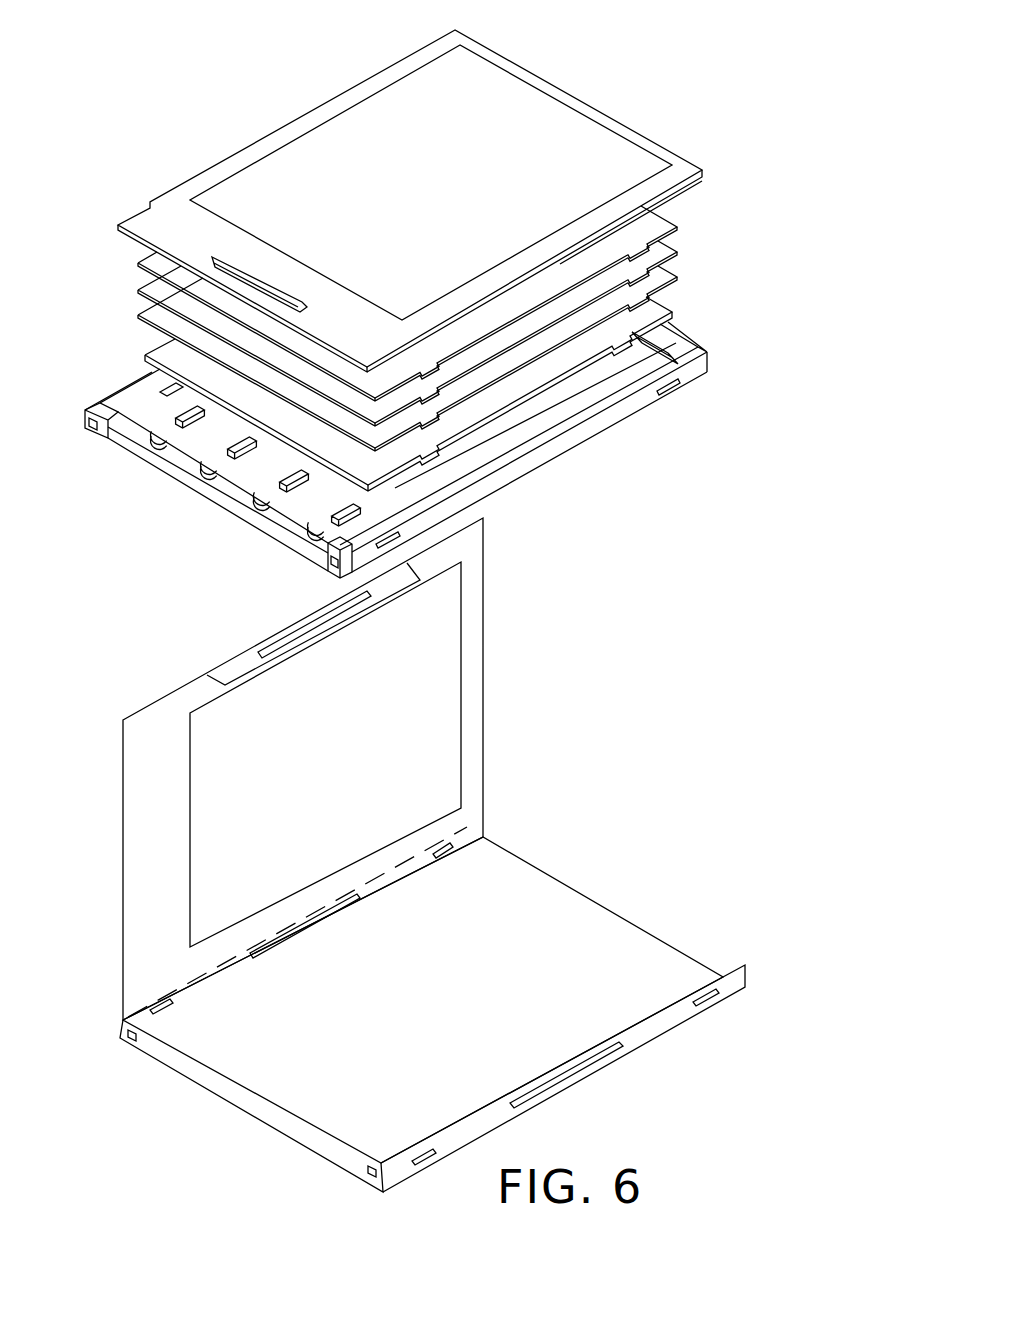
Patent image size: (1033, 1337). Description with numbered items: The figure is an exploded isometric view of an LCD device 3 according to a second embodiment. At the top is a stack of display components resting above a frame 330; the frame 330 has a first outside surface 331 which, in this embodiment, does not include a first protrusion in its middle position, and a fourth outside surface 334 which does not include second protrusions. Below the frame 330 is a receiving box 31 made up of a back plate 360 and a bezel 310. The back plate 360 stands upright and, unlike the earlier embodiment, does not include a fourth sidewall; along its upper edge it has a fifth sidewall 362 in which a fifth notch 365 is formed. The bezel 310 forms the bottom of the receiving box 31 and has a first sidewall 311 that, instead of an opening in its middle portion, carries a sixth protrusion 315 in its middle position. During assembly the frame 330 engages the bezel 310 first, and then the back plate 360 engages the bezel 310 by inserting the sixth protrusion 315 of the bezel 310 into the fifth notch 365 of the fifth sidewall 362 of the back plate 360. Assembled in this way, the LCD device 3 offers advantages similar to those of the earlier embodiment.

The LCD device 3 is at (266, 100).
The frame 330 is at (688, 333).
The first outside surface 331 is at (607, 422).
The fourth outside surface 334 is at (669, 331).
The receiving box 31 is at (537, 776).
The back plate 360 is at (473, 700).
The fifth sidewall 362 is at (240, 660).
The fifth notch 365 is at (282, 640).
The bezel 310 is at (572, 910).
The first sidewall 311 is at (672, 1018).
The sixth protrusion 315 is at (612, 1055).